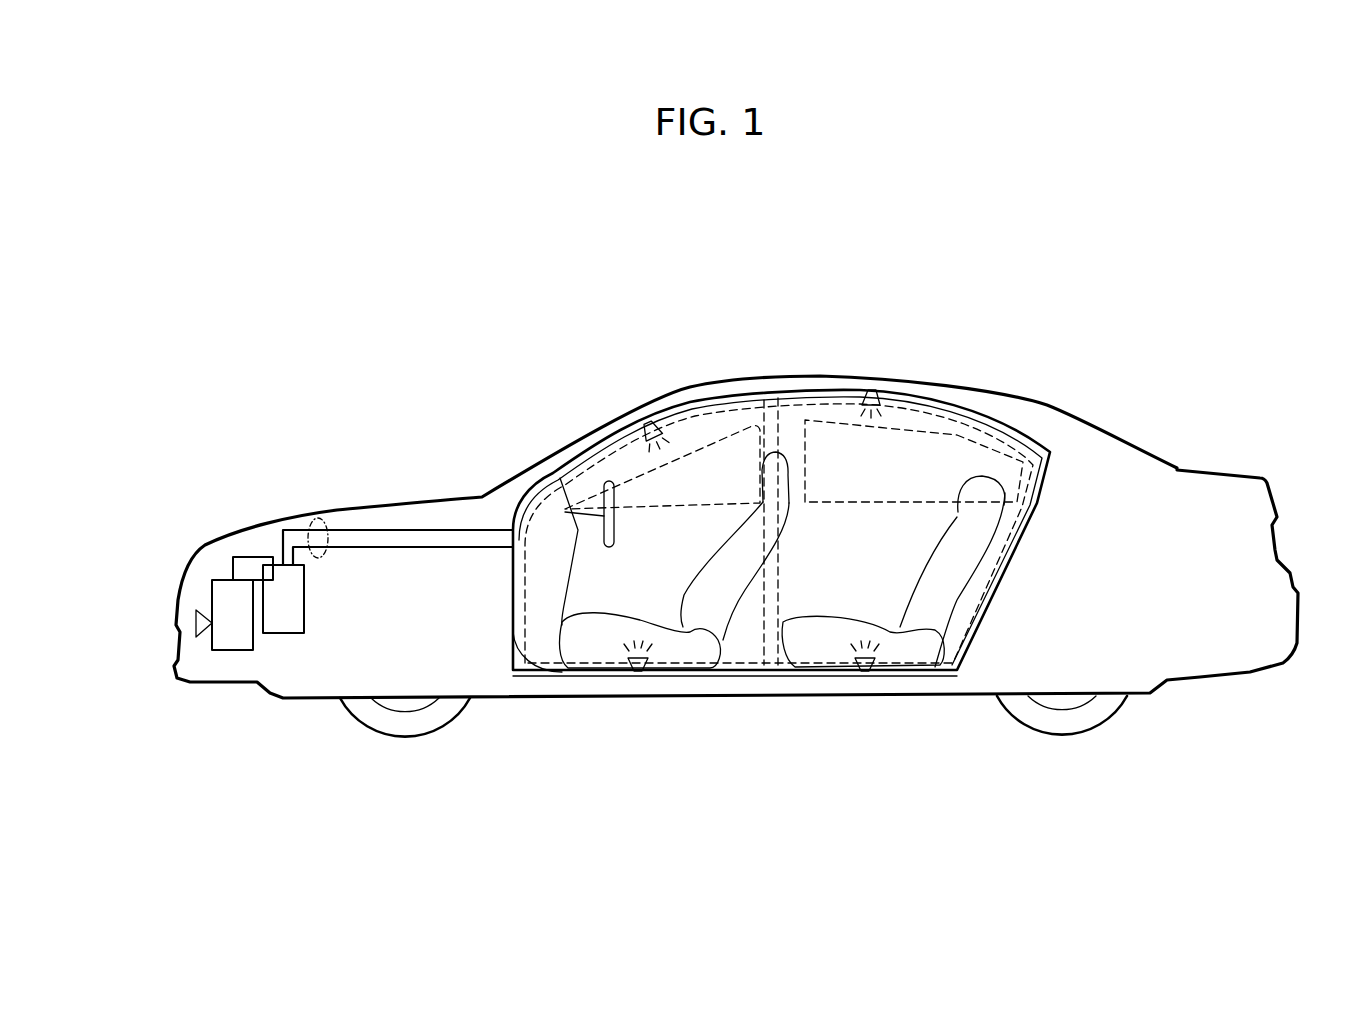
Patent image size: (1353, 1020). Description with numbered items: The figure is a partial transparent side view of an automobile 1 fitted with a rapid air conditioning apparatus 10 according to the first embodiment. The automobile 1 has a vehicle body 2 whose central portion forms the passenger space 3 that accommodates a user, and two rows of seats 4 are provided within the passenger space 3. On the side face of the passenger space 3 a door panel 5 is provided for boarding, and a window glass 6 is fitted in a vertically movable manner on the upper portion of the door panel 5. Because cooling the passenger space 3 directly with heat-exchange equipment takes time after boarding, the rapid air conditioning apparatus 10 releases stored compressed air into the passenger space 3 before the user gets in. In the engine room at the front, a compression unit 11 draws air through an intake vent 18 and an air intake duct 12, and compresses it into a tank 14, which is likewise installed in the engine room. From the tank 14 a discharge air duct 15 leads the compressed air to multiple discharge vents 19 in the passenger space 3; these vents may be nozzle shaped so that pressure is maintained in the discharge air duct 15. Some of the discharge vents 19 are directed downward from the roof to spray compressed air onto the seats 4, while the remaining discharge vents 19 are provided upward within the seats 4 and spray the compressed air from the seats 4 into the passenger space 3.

The automobile 1 is at (838, 250).
The vehicle body 2 is at (1090, 455).
The passenger space 3 is at (885, 533).
The seats 4 is at (723, 597).
The door panel 5 is at (709, 410).
The window glass 6 is at (637, 480).
The rapid air conditioning apparatus 10 is at (256, 424).
The compression unit 11 is at (228, 651).
The air intake duct 12 is at (246, 556).
The tank 14 is at (288, 634).
The discharge air duct 15 is at (318, 519).
The intake vent 18 is at (196, 621).
The discharge vent 19 is at (647, 420).